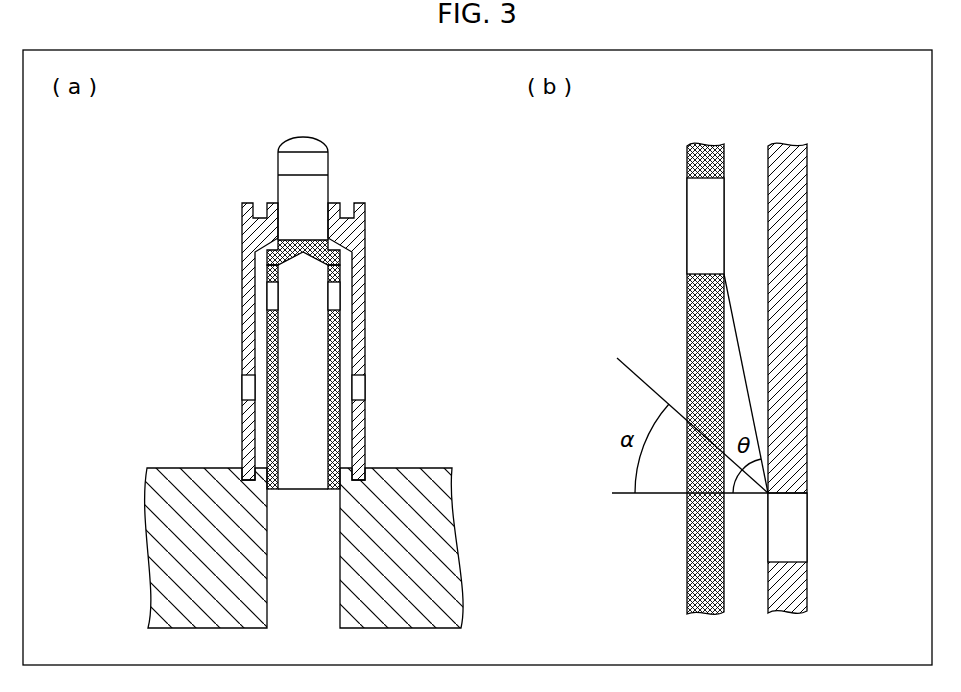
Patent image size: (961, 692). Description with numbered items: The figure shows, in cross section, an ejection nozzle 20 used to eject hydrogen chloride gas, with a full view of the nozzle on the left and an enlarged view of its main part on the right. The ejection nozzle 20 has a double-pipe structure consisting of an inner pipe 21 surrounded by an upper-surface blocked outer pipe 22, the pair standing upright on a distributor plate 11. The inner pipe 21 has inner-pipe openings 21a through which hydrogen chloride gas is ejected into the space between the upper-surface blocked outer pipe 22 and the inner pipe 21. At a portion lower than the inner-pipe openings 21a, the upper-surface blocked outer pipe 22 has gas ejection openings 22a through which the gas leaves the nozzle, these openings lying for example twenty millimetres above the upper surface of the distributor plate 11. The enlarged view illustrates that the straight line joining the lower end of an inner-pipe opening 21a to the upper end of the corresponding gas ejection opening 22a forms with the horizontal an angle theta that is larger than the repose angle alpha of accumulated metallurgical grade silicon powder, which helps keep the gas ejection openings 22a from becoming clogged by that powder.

The distributor plate 11 is at (160, 548).
The ejection nozzle 20 is at (381, 132).
The inner pipe 21 is at (268, 335).
The inner-pipe opening 21a is at (275, 308).
The upper-surface blocked outer pipe 22 is at (358, 335).
The gas ejection opening 22a is at (249, 399).